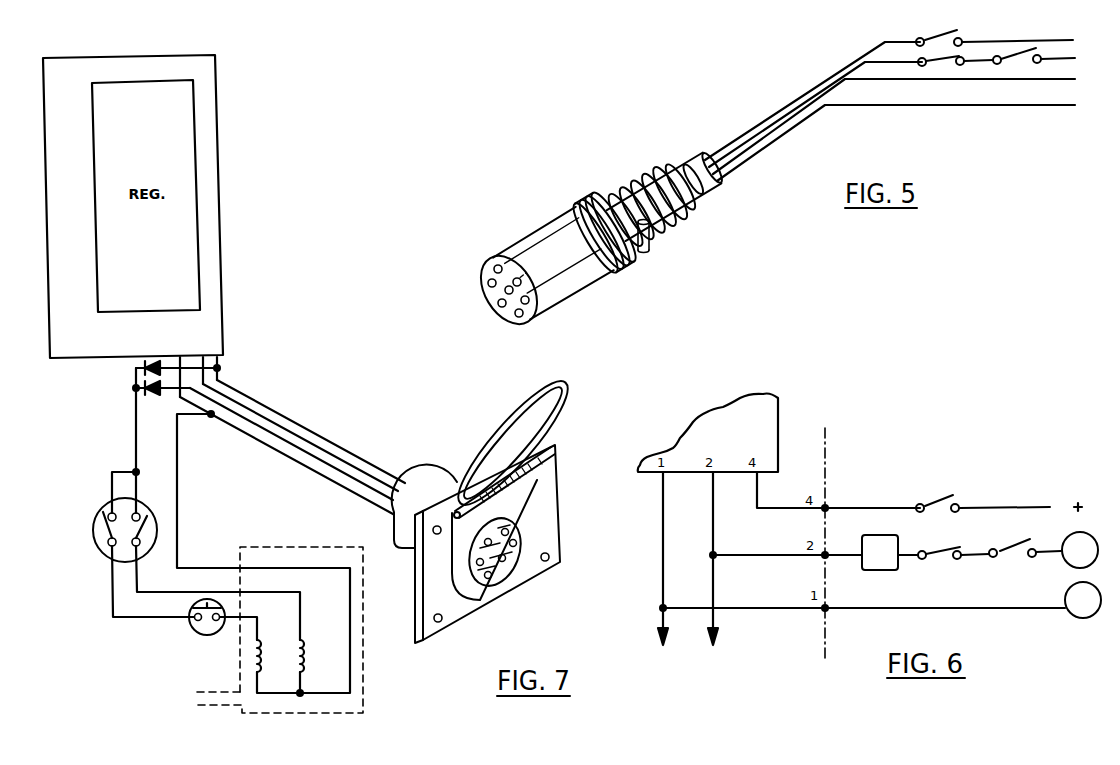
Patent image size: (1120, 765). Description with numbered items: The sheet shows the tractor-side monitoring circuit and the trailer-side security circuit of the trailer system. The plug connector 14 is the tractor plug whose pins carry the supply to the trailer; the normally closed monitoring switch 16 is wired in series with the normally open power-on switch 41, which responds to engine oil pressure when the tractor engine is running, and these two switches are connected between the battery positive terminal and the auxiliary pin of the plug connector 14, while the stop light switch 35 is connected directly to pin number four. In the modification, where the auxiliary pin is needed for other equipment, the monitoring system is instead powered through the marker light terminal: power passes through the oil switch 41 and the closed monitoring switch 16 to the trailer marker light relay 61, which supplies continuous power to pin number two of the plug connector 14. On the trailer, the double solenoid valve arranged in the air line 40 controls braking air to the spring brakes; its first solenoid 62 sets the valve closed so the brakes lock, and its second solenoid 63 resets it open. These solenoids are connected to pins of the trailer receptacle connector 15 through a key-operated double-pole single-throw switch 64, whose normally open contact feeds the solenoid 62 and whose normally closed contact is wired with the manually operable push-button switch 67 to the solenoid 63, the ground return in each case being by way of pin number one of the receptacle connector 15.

In FIG. 5, the plug connector 14 is at (556, 213).
In FIG. 7, the trailer receptacle connector 15 is at (448, 472).
In FIG. 5, the monitoring switch 16 is at (943, 64).
In FIG. 6, the monitoring switch 16 is at (940, 559).
In FIG. 5, the stop light switch 35 is at (938, 35).
In FIG. 6, the stop light switch 35 is at (932, 500).
In FIG. 5, the power-on switch 41 is at (1019, 55).
In FIG. 6, the power-on switch 41 is at (1013, 558).
In FIG. 7, the air line 40 is at (368, 688).
In FIG. 6, the trailer marker light relay 61 is at (880, 571).
In FIG. 7, the first solenoid 62 is at (310, 654).
In FIG. 7, the second solenoid 63 is at (266, 654).
In FIG. 7, the key-operated double-pole single-throw switch 64 is at (97, 518).
In FIG. 7, the push-button switch 67 is at (205, 637).